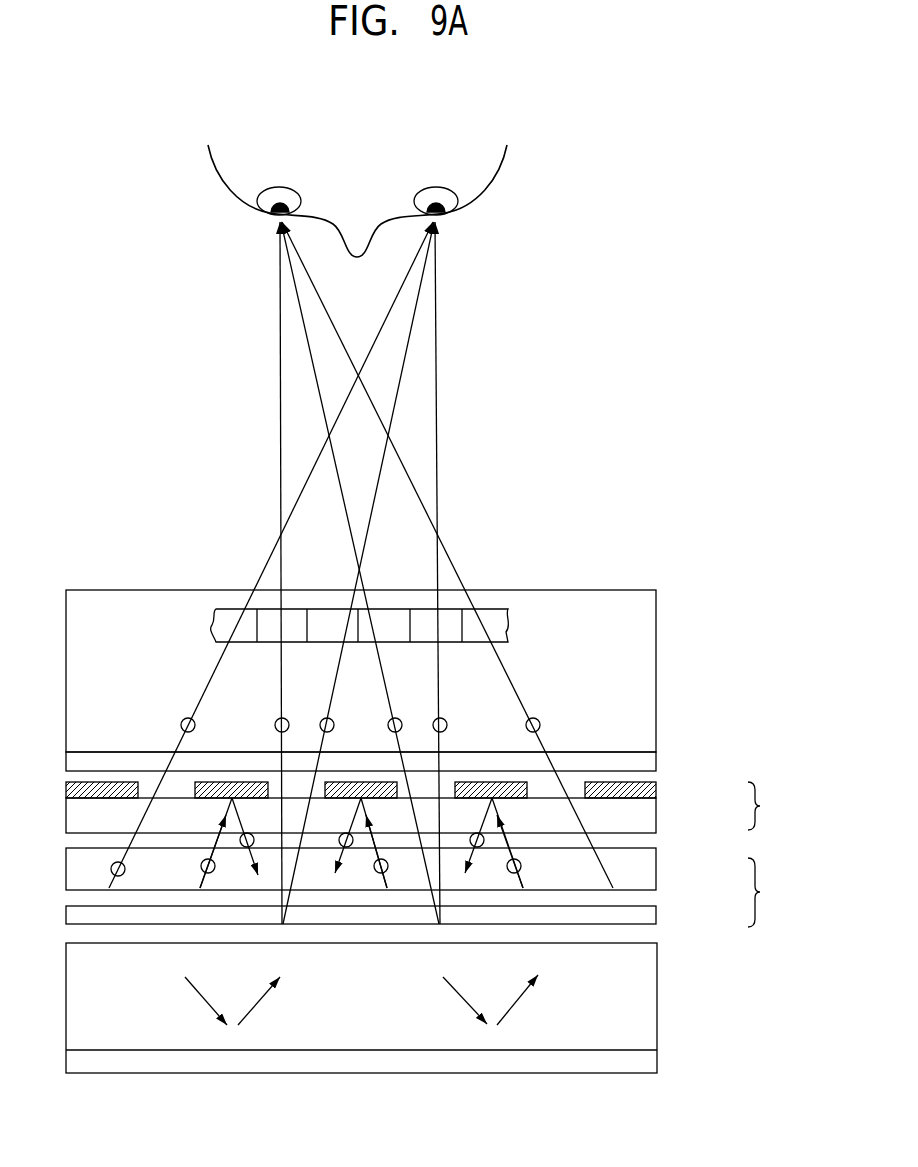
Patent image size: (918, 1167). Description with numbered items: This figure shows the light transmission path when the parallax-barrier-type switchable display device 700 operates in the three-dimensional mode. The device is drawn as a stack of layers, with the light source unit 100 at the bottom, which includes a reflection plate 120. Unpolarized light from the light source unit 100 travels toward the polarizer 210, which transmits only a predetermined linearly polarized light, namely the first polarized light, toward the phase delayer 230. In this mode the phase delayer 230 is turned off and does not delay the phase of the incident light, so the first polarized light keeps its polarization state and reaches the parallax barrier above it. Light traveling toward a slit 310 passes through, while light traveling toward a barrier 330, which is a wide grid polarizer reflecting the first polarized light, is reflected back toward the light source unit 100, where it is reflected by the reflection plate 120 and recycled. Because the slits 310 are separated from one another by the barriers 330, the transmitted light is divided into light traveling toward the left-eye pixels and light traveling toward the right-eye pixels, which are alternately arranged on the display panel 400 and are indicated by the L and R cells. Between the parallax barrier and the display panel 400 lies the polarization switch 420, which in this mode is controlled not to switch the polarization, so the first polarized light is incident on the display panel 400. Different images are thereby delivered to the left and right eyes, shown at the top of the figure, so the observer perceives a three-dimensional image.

The 2D/3D switchable display device 700 is at (614, 345).
The display panel 400 is at (640, 678).
The polarization switch 420 is at (640, 761).
The slit 310 is at (626, 775).
The barrier 330 is at (655, 793).
The phase delayer 230 is at (640, 869).
The polarizer 210 is at (640, 917).
The light source unit 100 is at (642, 996).
The reflection plate 120 is at (642, 1061).